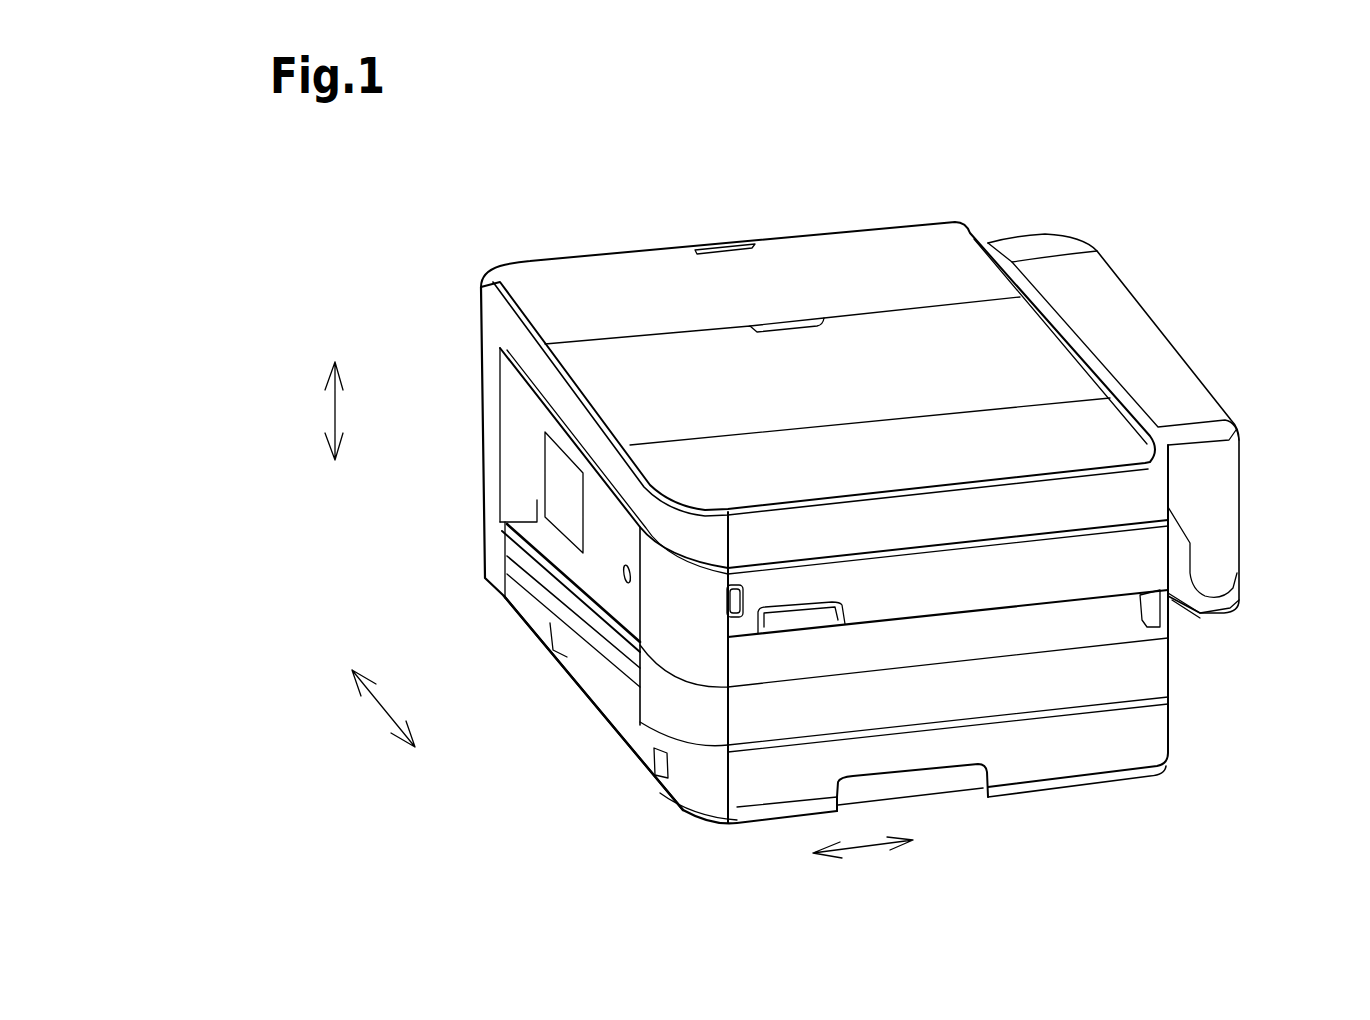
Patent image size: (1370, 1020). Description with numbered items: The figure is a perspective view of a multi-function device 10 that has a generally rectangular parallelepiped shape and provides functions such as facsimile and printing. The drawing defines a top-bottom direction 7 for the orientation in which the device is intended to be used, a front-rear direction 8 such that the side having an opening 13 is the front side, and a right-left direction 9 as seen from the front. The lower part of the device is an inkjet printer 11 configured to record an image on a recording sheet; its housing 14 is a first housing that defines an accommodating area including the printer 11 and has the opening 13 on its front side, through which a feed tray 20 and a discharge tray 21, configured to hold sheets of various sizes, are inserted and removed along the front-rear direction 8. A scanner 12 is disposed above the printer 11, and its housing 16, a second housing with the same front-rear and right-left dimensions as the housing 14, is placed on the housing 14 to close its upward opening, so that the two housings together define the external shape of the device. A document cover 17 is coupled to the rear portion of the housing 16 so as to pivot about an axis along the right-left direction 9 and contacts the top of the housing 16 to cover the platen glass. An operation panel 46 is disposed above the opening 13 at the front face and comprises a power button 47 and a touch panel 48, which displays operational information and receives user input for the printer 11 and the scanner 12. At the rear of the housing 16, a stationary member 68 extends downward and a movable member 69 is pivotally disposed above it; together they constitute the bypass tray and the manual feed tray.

The top-bottom direction 7 is at (333, 414).
The front-rear direction 8 is at (866, 847).
The right-left direction 9 is at (383, 710).
The multi-function device 10 is at (456, 216).
The inkjet printer 11 is at (1187, 673).
The scanner 12 is at (955, 190).
The opening 13 is at (502, 519).
The housing 14 is at (1103, 742).
The housing 16 is at (1133, 557).
The document cover 17 is at (493, 324).
The feed tray 20 is at (530, 607).
The discharge tray 21 is at (537, 538).
The operation panel 46 is at (540, 500).
The power button 47 is at (622, 583).
The touch panel 48 is at (540, 590).
The stationary member 68 is at (1220, 602).
The movable member 69 is at (1207, 497).